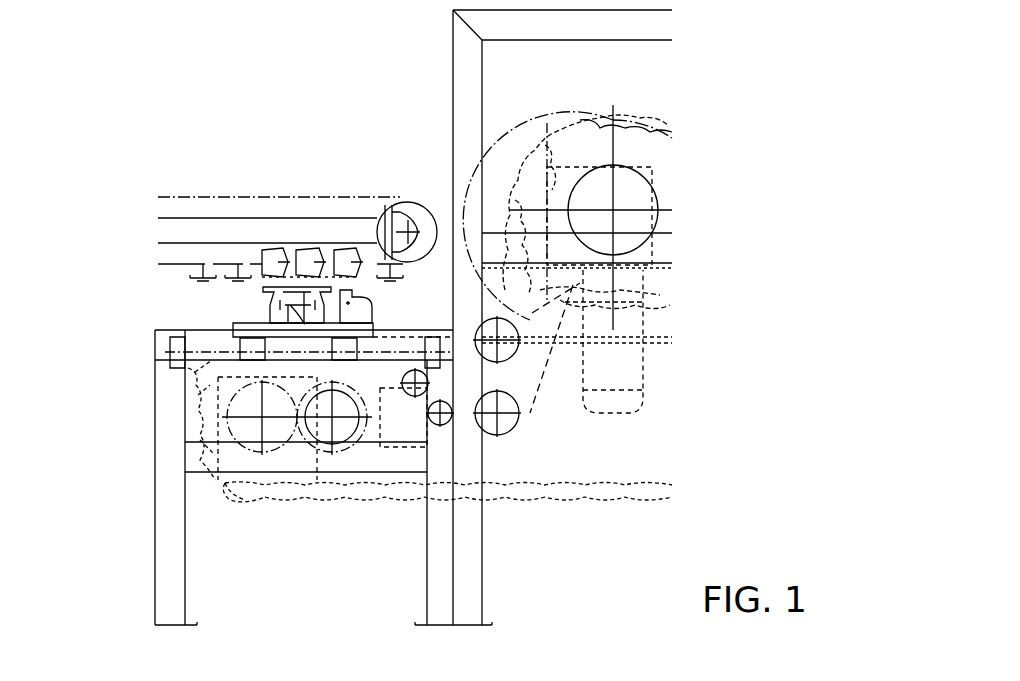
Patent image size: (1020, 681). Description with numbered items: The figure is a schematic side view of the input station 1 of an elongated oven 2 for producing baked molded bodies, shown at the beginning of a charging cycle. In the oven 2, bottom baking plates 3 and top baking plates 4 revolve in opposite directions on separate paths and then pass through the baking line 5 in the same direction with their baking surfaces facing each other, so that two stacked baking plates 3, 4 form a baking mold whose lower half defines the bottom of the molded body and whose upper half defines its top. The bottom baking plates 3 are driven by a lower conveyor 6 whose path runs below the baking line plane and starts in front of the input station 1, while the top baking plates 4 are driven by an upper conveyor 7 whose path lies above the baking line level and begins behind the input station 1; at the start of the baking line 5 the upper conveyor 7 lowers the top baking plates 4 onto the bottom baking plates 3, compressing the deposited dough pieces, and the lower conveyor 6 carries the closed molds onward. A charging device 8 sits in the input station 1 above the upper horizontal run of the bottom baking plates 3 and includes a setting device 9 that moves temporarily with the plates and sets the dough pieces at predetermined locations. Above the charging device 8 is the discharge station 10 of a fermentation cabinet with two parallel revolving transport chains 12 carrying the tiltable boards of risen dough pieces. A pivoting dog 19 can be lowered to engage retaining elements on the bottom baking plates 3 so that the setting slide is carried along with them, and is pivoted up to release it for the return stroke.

The input station 1 is at (140, 392).
The elongated oven 2 is at (443, 60).
The bottom baking plates 3 is at (180, 422).
The top baking plates 4 is at (625, 125).
The baking line 5 is at (633, 348).
The lower conveyor 6 is at (257, 510).
The upper conveyor 7 is at (540, 108).
The charging device 8 is at (197, 285).
The setting device 9 is at (258, 305).
The discharge station 10 is at (205, 180).
The transport chains 12 is at (357, 188).
The pivoting dog 19 is at (372, 308).